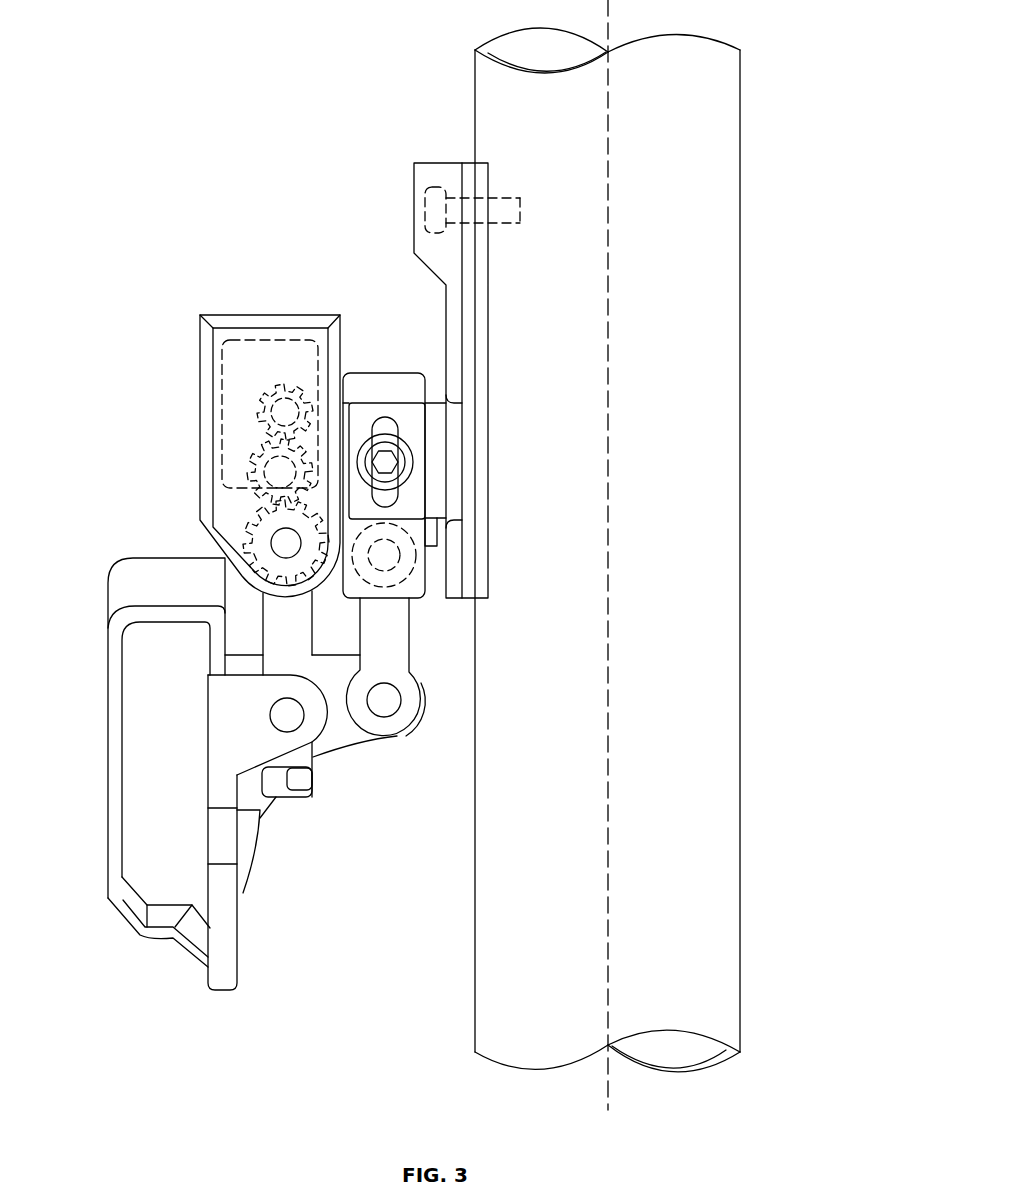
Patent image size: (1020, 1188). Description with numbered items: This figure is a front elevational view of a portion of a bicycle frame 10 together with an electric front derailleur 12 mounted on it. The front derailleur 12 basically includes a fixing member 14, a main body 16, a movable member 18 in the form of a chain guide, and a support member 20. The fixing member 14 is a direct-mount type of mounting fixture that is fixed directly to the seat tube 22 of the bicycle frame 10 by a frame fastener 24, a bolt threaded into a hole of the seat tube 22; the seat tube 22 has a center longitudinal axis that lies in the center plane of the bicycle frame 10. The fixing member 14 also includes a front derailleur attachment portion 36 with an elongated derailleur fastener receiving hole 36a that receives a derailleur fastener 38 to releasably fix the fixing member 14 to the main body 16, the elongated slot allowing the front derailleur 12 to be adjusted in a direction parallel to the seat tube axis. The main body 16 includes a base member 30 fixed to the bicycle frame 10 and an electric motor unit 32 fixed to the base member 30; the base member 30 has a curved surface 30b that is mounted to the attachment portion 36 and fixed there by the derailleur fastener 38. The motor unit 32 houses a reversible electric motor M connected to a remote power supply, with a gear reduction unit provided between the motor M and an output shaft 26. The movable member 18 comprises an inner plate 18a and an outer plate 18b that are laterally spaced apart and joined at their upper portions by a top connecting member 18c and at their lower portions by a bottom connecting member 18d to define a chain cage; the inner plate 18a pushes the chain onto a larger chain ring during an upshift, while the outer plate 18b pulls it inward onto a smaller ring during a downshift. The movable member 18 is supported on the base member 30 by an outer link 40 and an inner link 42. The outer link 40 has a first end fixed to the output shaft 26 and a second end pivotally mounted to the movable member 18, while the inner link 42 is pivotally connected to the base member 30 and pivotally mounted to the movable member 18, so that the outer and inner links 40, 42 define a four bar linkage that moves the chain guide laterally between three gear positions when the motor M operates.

The bicycle frame 10 is at (468, 97).
The front derailleur 12 is at (160, 367).
The fixing member 14 is at (498, 314).
The main body 16 is at (293, 253).
The movable member 18 is at (98, 607).
The inner plate 18a is at (208, 832).
The outer plate 18b is at (107, 806).
The top connecting member 18c is at (163, 585).
The bottom connecting member 18d is at (165, 918).
The support member 20 is at (436, 563).
The seat tube 22 is at (741, 101).
The frame fastener 24 is at (425, 202).
The output shaft 26 is at (293, 556).
The base member 30 is at (367, 365).
The curved surface 30b is at (418, 392).
The electric motor unit 32 is at (311, 308).
The front derailleur attachment portion 36 is at (398, 396).
The derailleur fastener receiving hole 36a is at (390, 430).
The derailleur fastener 38 is at (413, 462).
The outer link 40 is at (315, 757).
The inner link 42 is at (411, 647).
The electric motor M is at (251, 338).